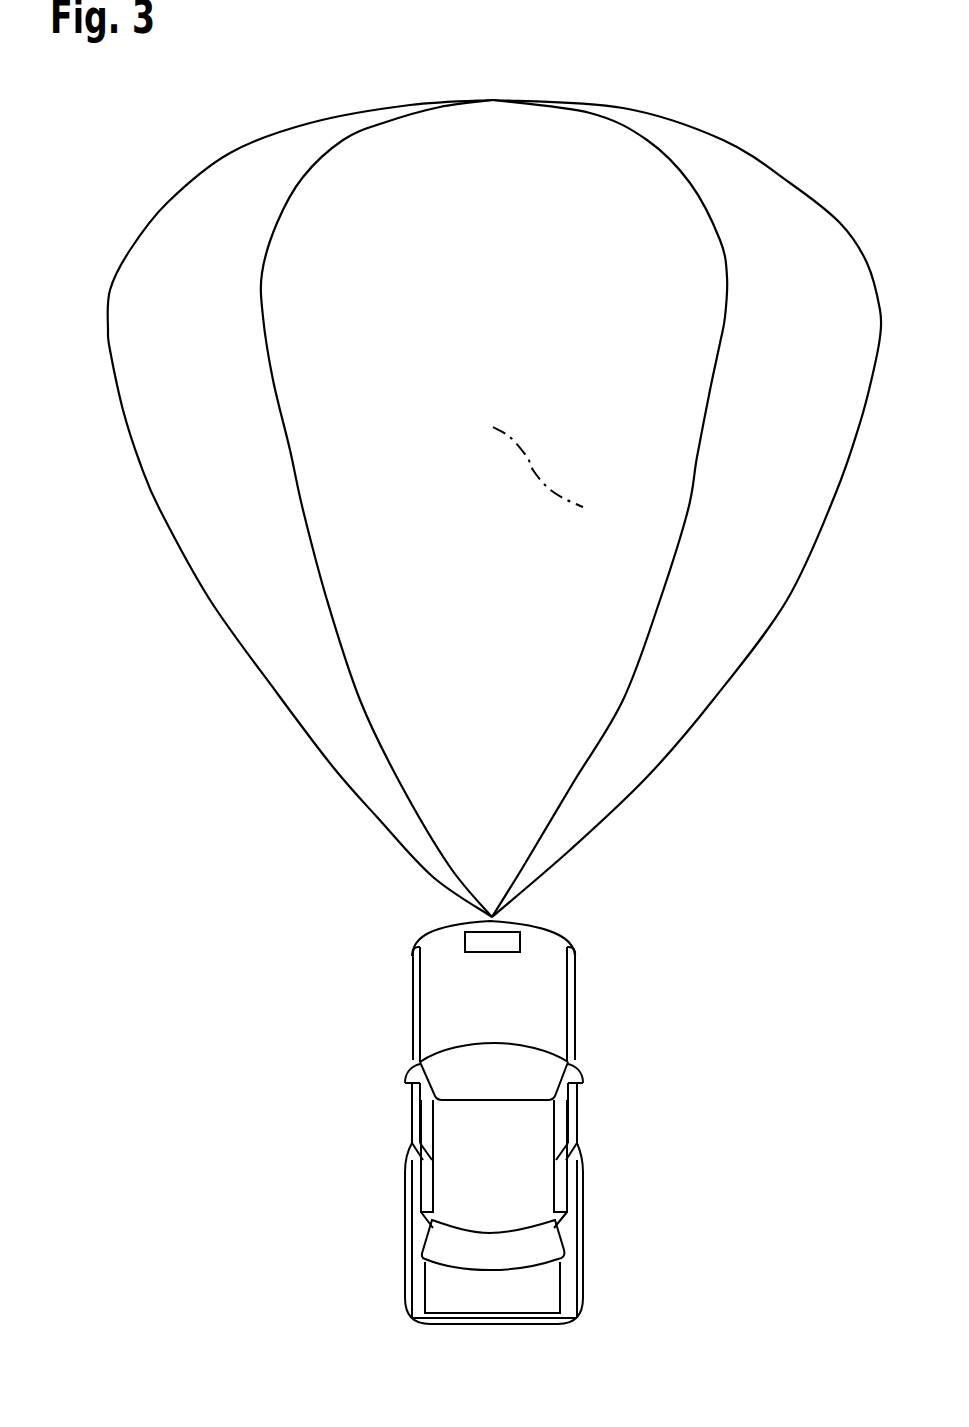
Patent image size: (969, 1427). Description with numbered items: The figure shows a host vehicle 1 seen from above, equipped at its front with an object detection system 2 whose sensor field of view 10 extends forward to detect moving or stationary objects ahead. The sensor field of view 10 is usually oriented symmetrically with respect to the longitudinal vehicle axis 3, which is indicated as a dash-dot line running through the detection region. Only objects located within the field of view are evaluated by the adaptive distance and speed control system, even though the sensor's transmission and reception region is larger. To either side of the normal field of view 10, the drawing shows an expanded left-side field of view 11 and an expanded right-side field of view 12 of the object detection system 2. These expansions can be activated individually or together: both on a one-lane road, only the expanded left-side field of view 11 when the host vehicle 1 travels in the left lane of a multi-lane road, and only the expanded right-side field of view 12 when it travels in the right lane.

The host vehicle 1 is at (530, 1293).
The object detection system 2 is at (495, 933).
The longitudinal vehicle axis 3 is at (545, 475).
The sensor field of view 10 is at (582, 175).
The expanded left-side field of view 11 is at (230, 595).
The expanded right-side field of view 12 is at (753, 597).